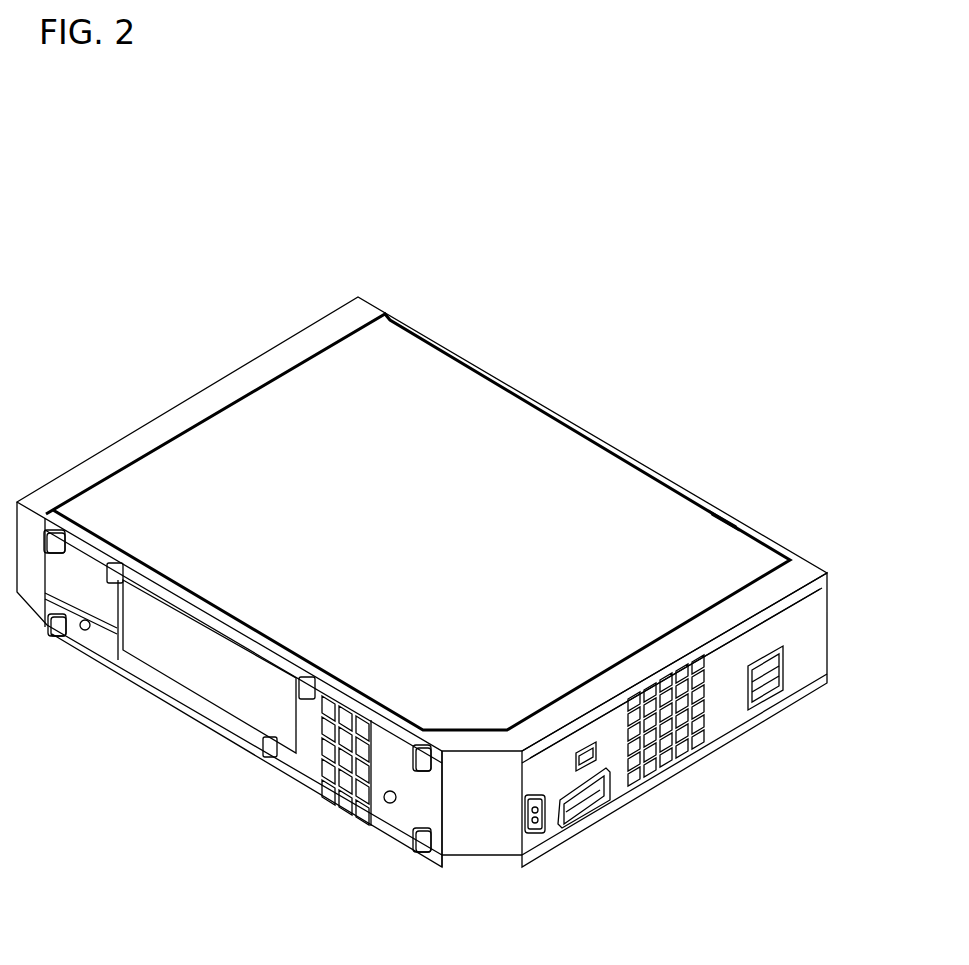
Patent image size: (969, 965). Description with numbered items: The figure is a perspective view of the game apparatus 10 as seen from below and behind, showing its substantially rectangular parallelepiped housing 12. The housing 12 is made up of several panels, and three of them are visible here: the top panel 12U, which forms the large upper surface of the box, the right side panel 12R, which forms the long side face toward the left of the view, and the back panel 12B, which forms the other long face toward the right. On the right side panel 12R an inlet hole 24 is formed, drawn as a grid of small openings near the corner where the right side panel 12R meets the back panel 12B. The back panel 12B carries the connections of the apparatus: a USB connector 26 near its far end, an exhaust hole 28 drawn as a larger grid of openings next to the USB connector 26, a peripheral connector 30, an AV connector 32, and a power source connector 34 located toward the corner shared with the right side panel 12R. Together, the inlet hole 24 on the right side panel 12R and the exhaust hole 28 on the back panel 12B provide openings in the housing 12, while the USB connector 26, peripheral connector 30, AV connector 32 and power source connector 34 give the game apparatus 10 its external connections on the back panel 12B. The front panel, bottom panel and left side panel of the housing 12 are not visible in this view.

The game apparatus 10 is at (223, 272).
The housing 12 is at (474, 348).
The top panel 12U is at (472, 508).
The back panel 12B is at (808, 636).
The right side panel 12R is at (206, 677).
The inlet hole 24 is at (330, 764).
The USB connector 26 is at (785, 666).
The exhaust hole 28 is at (700, 716).
The peripheral connector 30 is at (600, 760).
The AV connector 32 is at (590, 800).
The power source connector 34 is at (545, 818).